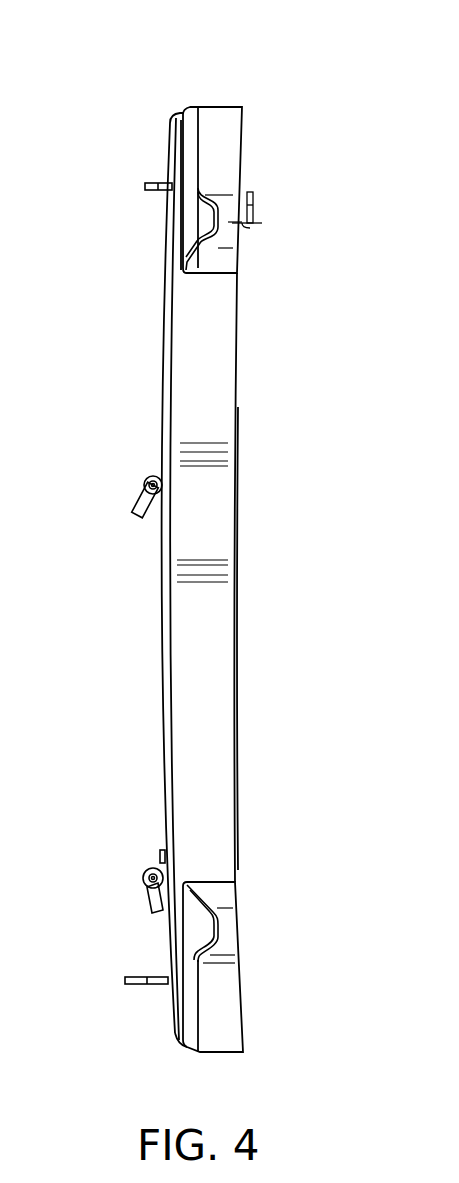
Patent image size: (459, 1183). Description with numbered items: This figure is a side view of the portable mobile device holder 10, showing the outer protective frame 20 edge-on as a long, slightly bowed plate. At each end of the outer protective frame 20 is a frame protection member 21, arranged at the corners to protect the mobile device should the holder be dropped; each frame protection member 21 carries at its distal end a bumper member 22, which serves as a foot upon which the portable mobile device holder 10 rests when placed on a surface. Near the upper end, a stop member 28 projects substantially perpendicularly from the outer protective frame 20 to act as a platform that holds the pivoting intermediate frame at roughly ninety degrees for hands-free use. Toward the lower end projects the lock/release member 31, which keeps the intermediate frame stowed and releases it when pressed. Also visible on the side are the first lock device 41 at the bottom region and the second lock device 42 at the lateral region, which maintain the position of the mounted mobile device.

The portable mobile device holder 10 is at (85, 70).
The outer protective frame 20 is at (218, 322).
The frame protection member 21 is at (228, 142).
The bumper member 22 is at (228, 225).
The stop member 28 is at (155, 186).
The lock/release member 31 is at (137, 978).
The first lock device 41 is at (158, 872).
The second lock device 42 is at (132, 512).